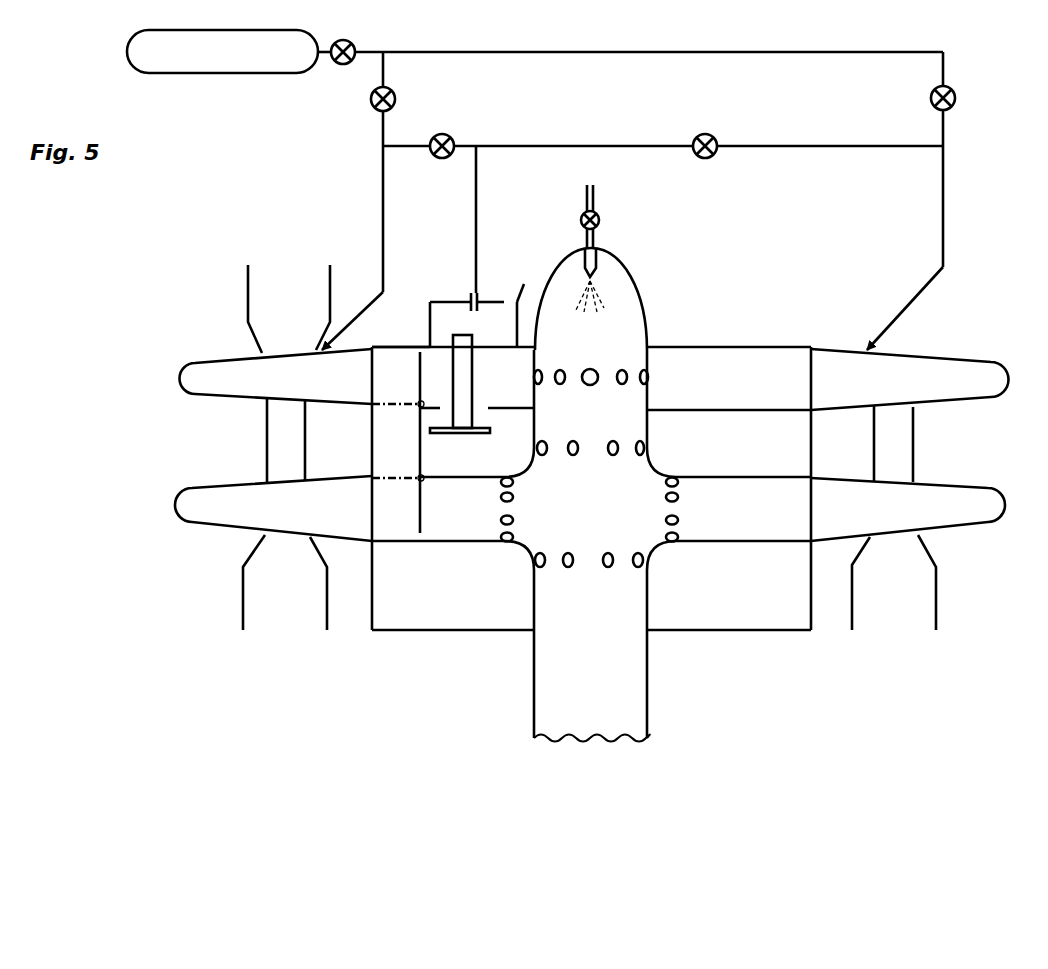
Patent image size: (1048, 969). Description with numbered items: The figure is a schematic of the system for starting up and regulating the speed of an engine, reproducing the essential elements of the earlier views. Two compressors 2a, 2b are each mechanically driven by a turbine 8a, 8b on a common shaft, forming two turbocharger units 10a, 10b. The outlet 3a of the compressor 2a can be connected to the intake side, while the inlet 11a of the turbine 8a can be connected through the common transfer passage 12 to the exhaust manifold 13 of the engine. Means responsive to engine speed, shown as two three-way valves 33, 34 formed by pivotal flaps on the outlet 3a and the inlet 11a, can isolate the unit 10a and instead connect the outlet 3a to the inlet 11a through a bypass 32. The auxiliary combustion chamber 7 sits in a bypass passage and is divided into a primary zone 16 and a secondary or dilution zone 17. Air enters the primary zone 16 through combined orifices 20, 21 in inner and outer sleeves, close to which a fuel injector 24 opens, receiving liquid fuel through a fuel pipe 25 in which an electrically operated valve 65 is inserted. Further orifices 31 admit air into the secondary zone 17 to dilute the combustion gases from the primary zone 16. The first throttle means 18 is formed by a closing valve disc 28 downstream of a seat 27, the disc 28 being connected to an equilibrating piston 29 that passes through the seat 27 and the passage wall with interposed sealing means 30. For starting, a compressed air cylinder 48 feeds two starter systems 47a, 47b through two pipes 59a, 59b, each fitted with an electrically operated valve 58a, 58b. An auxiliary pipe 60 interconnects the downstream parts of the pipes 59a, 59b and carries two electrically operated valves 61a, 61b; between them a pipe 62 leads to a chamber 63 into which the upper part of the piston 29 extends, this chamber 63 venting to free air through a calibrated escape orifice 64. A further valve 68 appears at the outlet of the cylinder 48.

The compressed air cylinder 48 is at (230, 58).
The valve 68 is at (352, 44).
The electrically operated valve 58a is at (371, 97).
The electrically operated valve 58b is at (955, 92).
The pipe 59a is at (383, 127).
The pipe 59b is at (943, 127).
The auxiliary pipe 60 is at (822, 143).
The electrically operated valve 61a is at (452, 138).
The electrically operated valve 61b is at (708, 134).
The pipe 62 is at (478, 226).
The chamber 63 is at (447, 300).
The calibrated escape orifice 64 is at (516, 286).
The electrically operated valve 65 is at (602, 222).
The fuel pipe 25 is at (595, 241).
The fuel injector 24 is at (598, 260).
The auxiliary combustion chamber 7 is at (650, 322).
The starter system 47a is at (330, 345).
The starter system 47b is at (892, 322).
The compressor 2a is at (202, 368).
The compressor 2b is at (980, 367).
The turbine 8a is at (197, 497).
The turbine 8b is at (1000, 500).
The turbocharger unit 10a is at (262, 442).
The turbocharger unit 10b is at (917, 452).
The compressor outlet 3a is at (360, 350).
The turbine inlet 11a is at (370, 512).
The three-way valve 33 is at (398, 401).
The bypass 32 is at (408, 474).
The seat 27 is at (442, 413).
The three-way valve 34 is at (417, 500).
The sealing means 30 is at (451, 352).
The first throttle means 18 is at (490, 415).
The equilibrating piston 29 is at (467, 393).
The closing valve disc 28 is at (462, 433).
The throttle orifice 20 is at (586, 370).
The throttle orifice 21 is at (620, 370).
The primary zone 16 is at (598, 420).
The secondary zone 17 is at (620, 501).
The orifices 31 is at (543, 455).
The transfer passage 12 is at (597, 534).
The exhaust manifold 13 is at (644, 694).